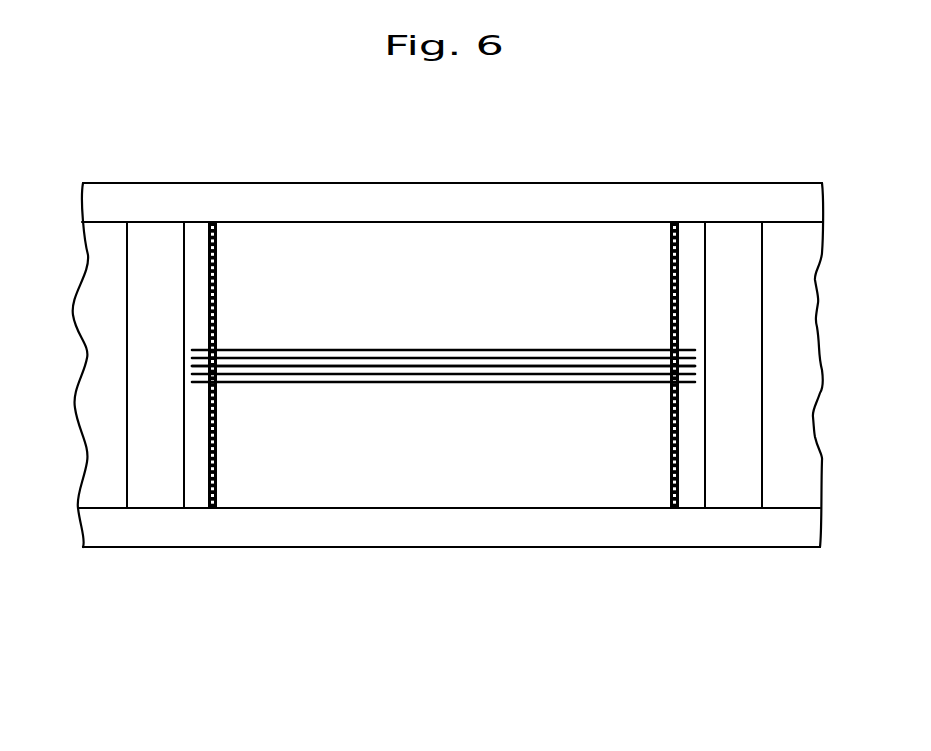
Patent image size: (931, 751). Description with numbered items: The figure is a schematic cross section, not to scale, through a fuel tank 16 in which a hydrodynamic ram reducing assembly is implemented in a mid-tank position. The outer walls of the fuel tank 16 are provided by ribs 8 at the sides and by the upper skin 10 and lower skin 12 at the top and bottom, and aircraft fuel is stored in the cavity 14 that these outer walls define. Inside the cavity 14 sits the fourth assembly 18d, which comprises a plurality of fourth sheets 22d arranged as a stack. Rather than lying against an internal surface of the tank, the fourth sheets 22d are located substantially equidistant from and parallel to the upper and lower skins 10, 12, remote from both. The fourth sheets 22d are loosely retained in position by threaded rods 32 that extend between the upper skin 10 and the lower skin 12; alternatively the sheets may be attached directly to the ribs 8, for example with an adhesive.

The rib 8 is at (145, 362).
The upper skin 10 is at (577, 192).
The lower skin 12 is at (623, 530).
The cavity 14 is at (462, 288).
The fuel tank 16 is at (208, 170).
The fourth assembly 18d is at (567, 338).
The fourth sheets 22d is at (319, 365).
The threaded rod 32 is at (217, 432).